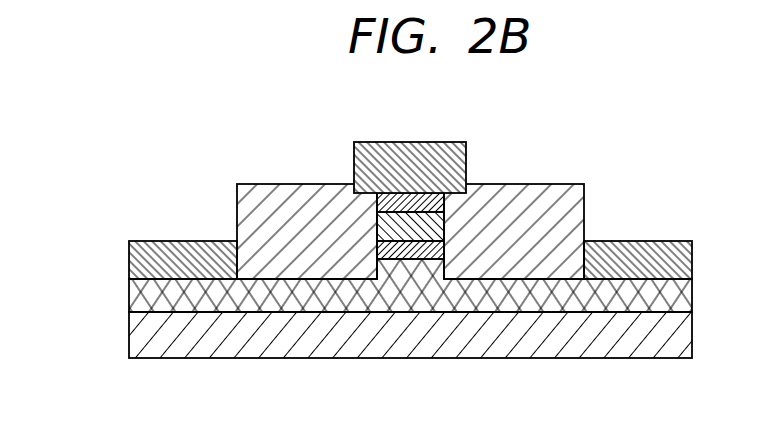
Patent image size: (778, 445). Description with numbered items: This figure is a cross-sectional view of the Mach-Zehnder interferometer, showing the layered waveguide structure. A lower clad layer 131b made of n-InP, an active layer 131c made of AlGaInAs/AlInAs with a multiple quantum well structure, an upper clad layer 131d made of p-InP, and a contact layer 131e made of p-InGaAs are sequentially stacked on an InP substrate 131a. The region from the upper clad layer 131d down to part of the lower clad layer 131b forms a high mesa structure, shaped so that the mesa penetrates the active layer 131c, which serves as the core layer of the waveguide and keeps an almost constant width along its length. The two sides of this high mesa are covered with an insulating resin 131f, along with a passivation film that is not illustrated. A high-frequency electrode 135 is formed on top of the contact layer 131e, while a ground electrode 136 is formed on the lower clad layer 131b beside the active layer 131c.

The InP substrate 131a is at (693, 341).
The lower clad layer 131b is at (693, 291).
The active layer 131c is at (423, 259).
The upper clad layer 131d is at (448, 222).
The contact layer 131e is at (430, 202).
The insulating resin 131f is at (586, 197).
The high-frequency electrode 135 is at (375, 148).
The ground electrode 136 is at (152, 241).